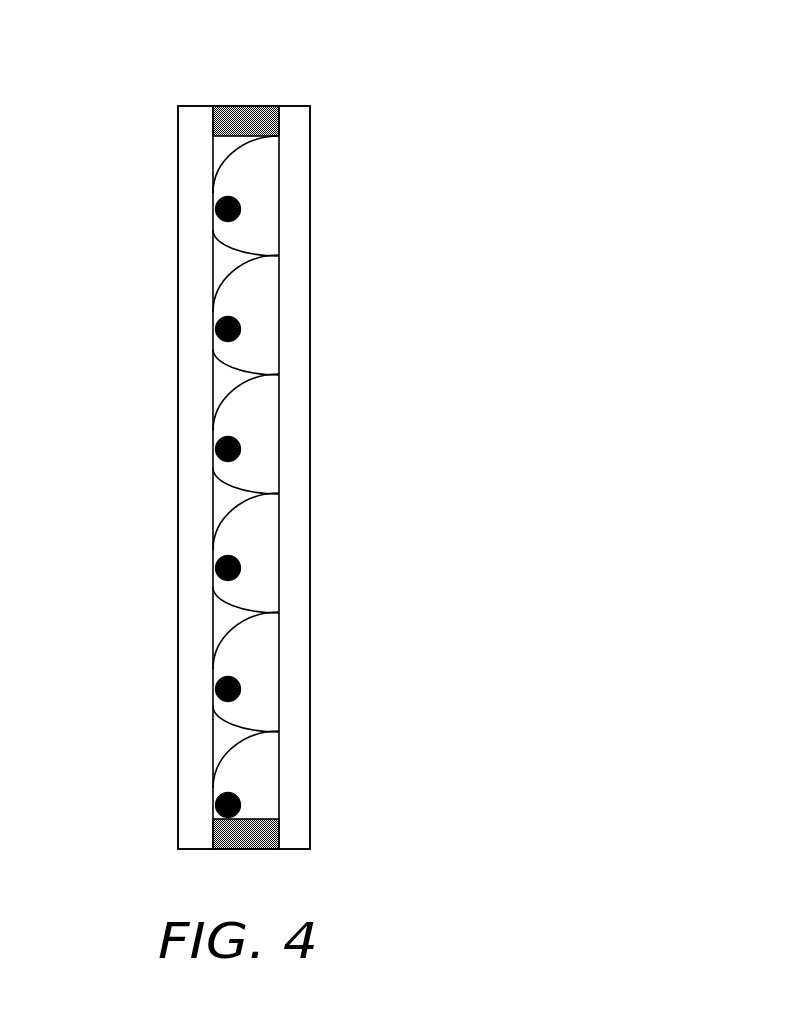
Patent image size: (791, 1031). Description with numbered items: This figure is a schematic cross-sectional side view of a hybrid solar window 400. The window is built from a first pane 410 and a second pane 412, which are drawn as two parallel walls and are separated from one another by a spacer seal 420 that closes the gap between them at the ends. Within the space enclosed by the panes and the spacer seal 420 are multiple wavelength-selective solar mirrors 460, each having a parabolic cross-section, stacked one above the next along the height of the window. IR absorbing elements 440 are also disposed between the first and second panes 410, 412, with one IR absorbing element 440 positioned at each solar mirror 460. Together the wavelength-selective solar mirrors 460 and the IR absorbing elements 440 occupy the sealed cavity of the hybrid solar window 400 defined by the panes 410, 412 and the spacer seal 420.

The hybrid solar window 400 is at (322, 68).
The first pane 410 is at (310, 180).
The second pane 412 is at (178, 368).
The spacer seal 420 is at (247, 106).
The IR absorbing element 440 is at (240, 450).
The wavelength-selective solar mirror 460 is at (233, 281).